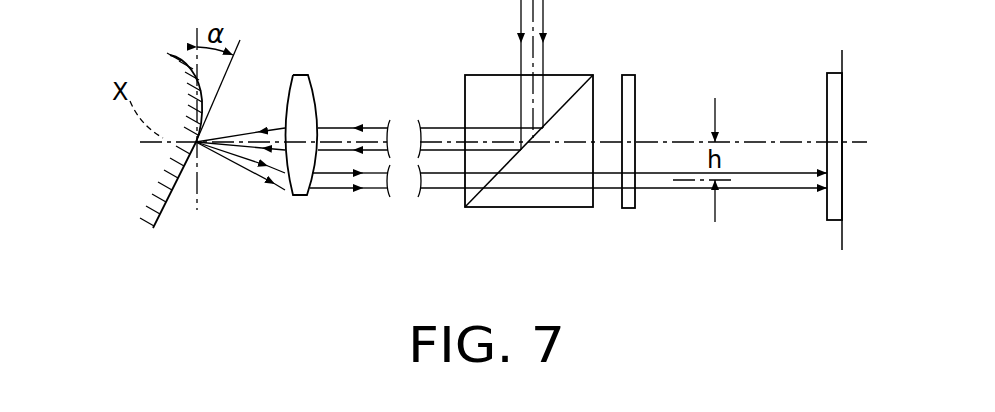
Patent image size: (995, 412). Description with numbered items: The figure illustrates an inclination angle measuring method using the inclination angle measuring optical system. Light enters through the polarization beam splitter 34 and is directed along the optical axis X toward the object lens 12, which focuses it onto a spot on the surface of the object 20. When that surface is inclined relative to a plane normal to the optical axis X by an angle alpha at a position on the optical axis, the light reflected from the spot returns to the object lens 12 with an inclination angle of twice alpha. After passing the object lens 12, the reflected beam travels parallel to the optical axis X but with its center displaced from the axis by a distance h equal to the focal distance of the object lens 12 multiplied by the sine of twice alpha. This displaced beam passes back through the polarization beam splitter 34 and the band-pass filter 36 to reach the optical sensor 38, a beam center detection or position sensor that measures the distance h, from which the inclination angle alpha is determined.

The object lens 12 is at (308, 78).
The object 20 is at (162, 210).
The polarization beam splitter 34 is at (547, 202).
The band-pass filter 36 is at (628, 208).
The optical sensor 38 is at (833, 220).